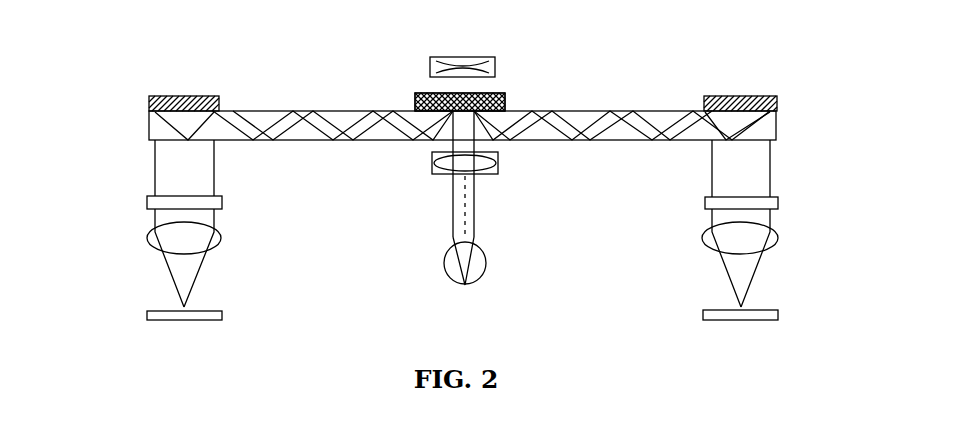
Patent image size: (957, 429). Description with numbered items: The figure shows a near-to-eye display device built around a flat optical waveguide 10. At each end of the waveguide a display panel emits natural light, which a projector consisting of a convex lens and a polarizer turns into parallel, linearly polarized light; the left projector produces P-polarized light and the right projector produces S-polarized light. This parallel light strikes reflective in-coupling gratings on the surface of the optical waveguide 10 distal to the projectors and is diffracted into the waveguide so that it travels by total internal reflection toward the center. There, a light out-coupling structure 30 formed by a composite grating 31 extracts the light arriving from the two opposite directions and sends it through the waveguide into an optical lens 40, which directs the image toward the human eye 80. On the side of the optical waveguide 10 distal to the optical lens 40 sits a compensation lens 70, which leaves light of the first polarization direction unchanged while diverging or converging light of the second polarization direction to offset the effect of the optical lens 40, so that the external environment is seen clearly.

The optical waveguide 10 is at (273, 112).
The light out-coupling structure 30 is at (460, 102).
The composite grating 31 is at (505, 93).
The optical lens 40 is at (500, 168).
The compensation lens 70 is at (487, 57).
The human eye 80 is at (487, 271).